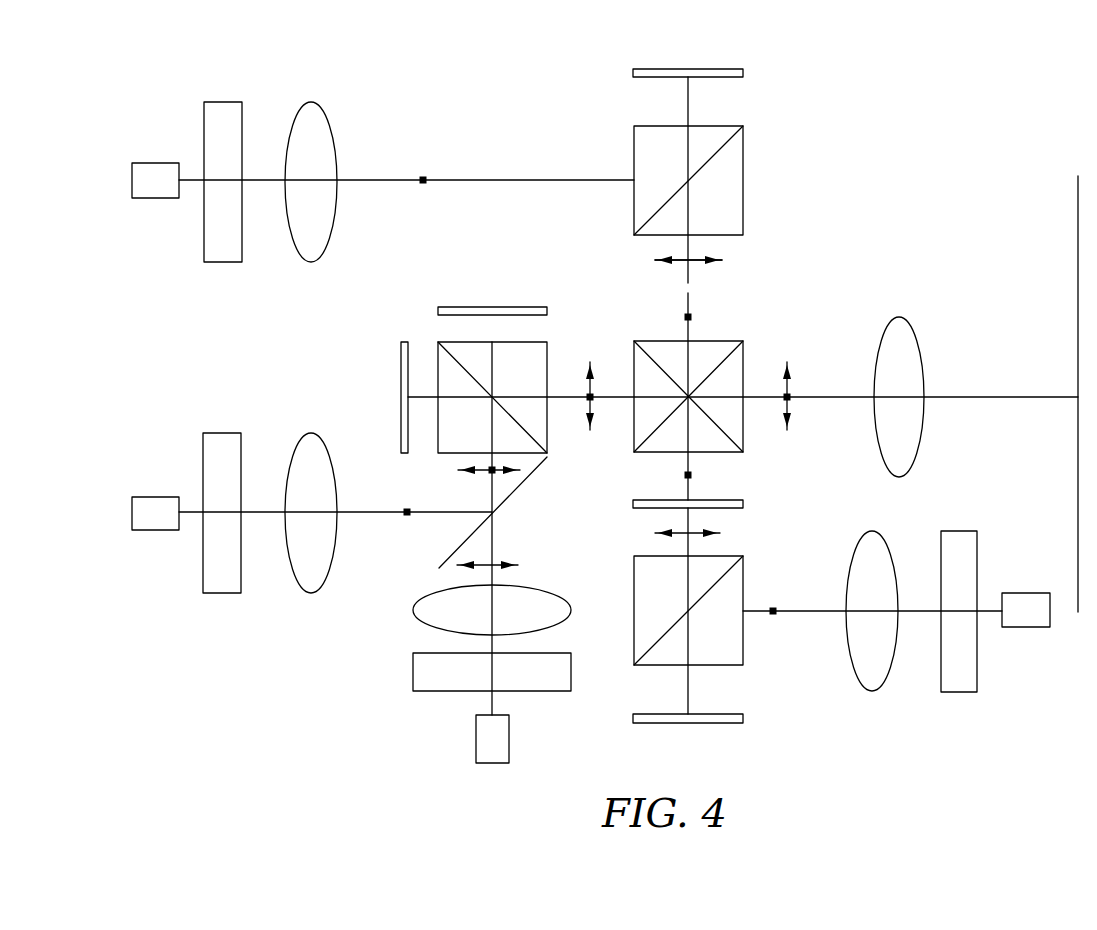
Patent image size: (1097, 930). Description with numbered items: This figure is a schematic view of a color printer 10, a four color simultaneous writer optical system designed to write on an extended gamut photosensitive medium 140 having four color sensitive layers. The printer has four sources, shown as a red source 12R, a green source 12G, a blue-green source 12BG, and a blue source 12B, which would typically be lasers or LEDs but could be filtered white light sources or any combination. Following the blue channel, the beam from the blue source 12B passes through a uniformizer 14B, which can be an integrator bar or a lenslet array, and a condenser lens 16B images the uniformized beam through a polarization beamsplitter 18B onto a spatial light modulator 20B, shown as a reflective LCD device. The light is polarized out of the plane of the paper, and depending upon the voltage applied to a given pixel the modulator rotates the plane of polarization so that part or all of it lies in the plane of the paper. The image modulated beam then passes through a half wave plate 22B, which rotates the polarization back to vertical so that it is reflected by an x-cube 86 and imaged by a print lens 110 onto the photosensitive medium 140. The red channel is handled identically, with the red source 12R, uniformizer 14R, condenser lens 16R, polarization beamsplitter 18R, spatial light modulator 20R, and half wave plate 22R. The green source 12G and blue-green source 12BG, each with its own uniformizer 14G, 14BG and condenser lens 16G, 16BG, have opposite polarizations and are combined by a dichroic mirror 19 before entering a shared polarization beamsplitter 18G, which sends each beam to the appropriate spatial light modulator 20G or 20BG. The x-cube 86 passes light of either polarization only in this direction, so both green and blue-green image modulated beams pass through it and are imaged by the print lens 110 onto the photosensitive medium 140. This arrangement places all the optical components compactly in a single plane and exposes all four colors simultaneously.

The color printer 10 is at (1028, 95).
The blue source 12B is at (152, 163).
The blue-green source 12BG is at (130, 513).
The green source 12G is at (490, 765).
The red source 12R is at (1032, 593).
The uniformizer 14B is at (242, 117).
The uniformizer 14BG is at (203, 447).
The uniformizer 14G is at (453, 690).
The uniformizer 14R is at (941, 540).
The condenser lens 16B is at (336, 145).
The condenser lens 16BG is at (307, 435).
The condenser lens 16G is at (532, 585).
The condenser lens 16R is at (857, 547).
The polarization beamsplitter 18B is at (634, 138).
The polarization beamsplitter 18G is at (438, 345).
The polarization beamsplitter 18R is at (634, 613).
The dichroic mirror 19 is at (523, 490).
The spatial light modulator 20B is at (743, 73).
The spatial light modulator 20BG is at (402, 395).
The spatial light modulator 20G is at (530, 307).
The spatial light modulator 20R is at (743, 718).
The half wave plate 22B is at (742, 288).
The half wave plate 22R is at (743, 503).
The x-cube 86 is at (743, 368).
The print lens 110 is at (881, 335).
The photosensitive medium 140 is at (1078, 247).